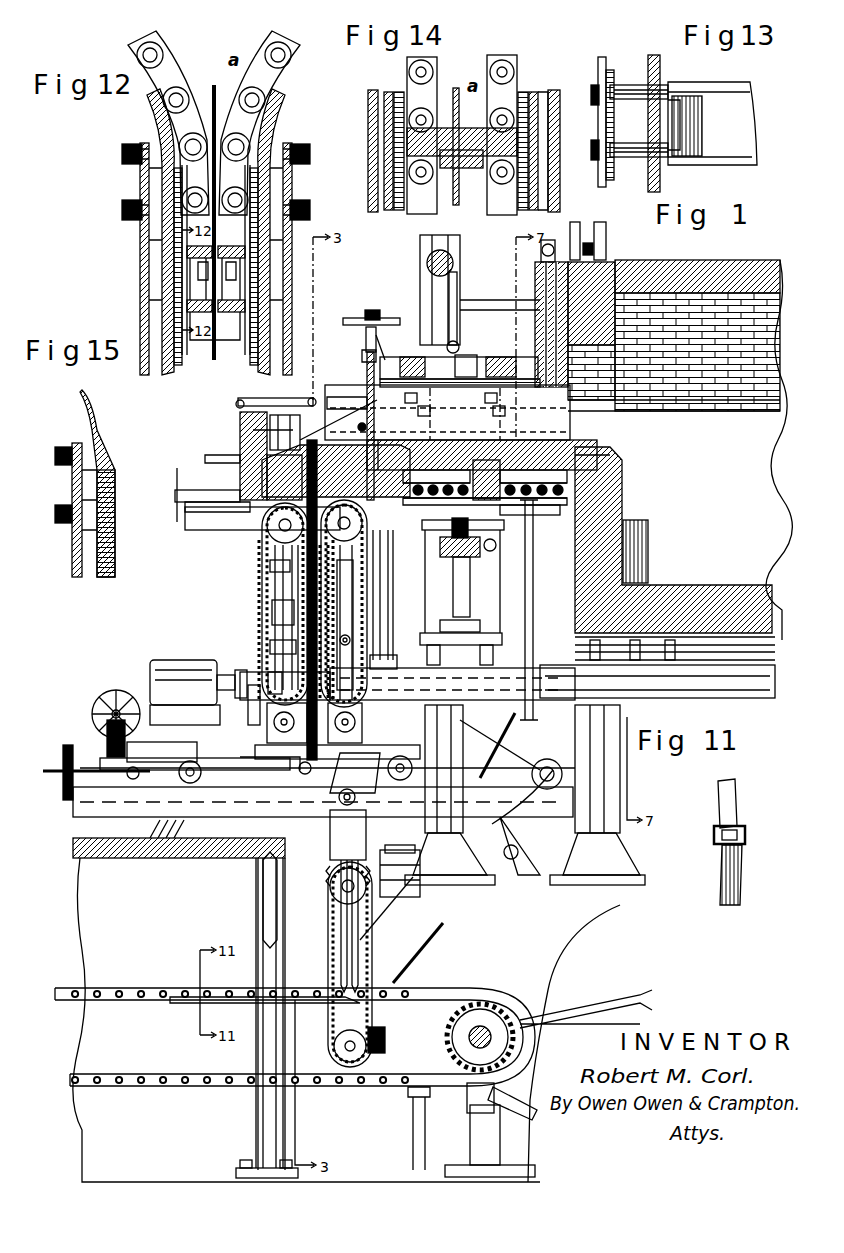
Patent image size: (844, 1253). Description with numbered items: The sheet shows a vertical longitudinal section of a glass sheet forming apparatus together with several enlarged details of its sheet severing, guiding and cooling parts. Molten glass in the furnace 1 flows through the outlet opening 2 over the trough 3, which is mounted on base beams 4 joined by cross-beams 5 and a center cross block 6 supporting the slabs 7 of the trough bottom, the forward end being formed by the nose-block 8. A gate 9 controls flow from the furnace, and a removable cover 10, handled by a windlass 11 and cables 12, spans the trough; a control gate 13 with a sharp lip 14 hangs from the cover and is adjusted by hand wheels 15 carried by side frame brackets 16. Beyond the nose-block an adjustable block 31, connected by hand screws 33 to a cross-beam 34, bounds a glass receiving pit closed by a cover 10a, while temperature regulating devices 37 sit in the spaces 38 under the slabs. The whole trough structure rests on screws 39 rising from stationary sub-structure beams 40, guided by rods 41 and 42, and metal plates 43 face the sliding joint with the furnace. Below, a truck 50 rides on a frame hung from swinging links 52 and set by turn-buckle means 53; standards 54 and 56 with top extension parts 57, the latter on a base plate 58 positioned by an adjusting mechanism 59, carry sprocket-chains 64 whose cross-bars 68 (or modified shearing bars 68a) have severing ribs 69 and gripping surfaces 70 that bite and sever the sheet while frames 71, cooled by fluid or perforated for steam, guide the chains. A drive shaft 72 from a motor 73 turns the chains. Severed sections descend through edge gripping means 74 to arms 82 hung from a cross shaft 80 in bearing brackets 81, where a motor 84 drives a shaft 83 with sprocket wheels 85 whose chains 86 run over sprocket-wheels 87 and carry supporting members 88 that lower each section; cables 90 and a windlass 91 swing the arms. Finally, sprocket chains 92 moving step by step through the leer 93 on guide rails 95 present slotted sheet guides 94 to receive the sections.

In FIG. 1, the furnace 1 is at (703, 450).
In FIG. 1, the outlet opening 2 is at (600, 442).
In FIG. 1, the discharge trough 3 is at (440, 426).
In FIG. 1, the base beams 4 is at (210, 521).
In FIG. 1, the cross-beams 5 is at (575, 474).
In FIG. 1, the center cross block 6 is at (506, 521).
In FIG. 1, the slabs 7 is at (519, 466).
In FIG. 1, the nose-block 8 is at (380, 452).
In FIG. 1, the gate 9 is at (534, 313).
In FIG. 1, the removable cover 10 is at (477, 362).
In FIG. 1, the cover 10a is at (277, 398).
In FIG. 1, the windlass 11 is at (435, 262).
In FIG. 1, the cables 12 is at (454, 286).
In FIG. 1, the control gate 13 is at (368, 396).
In FIG. 1, the lip 14 is at (351, 426).
In FIG. 1, the hand wheels 15 is at (366, 322).
In FIG. 1, the side frame brackets 16 is at (361, 357).
In FIG. 1, the block 31 is at (238, 440).
In FIG. 1, the hand screws 33 is at (222, 490).
In FIG. 1, the cross-beam 34 is at (182, 512).
In FIG. 1, the temperature regulating devices 37 is at (575, 498).
In FIG. 1, the spaces 38 is at (570, 440).
In FIG. 1, the screws 39 is at (469, 611).
In FIG. 1, the sub-structure beams 40 is at (758, 690).
In FIG. 1, the guide rods 41 is at (535, 579).
In FIG. 1, the guide rods 42 is at (380, 590).
In FIG. 1, the metal plates 43 is at (606, 452).
In FIG. 1, the truck 50 is at (240, 771).
In FIG. 1, the swinging links 52 is at (165, 830).
In FIG. 1, the turn-buckle means 53 is at (508, 728).
In FIG. 1, the standard 54 is at (352, 701).
In FIG. 1, the standards 56 is at (275, 668).
In FIG. 1, the top extension parts 57 is at (130, 820).
In FIG. 1, the base plate 58 is at (190, 781).
In FIG. 1, the adjusting mechanism 59 is at (92, 716).
In FIG. 12, the sprocket-chain 64 is at (167, 74).
In FIG. 14, the sprocket-chain 64 is at (434, 70).
In FIG. 13, the sprocket-chain 64 is at (651, 70).
In FIG. 1, the sprocket-chain 64 is at (262, 568).
In FIG. 12, the cross-bars 68 is at (188, 255).
In FIG. 13, the cross-bars 68 is at (737, 122).
In FIG. 1, the cross-bars 68 is at (263, 538).
In FIG. 14, the gripping bars 68a is at (522, 96).
In FIG. 12, the severing ribs 69 is at (188, 280).
In FIG. 12, the gripping surface 70 is at (188, 296).
In FIG. 12, the frames 71 is at (156, 133).
In FIG. 15, the frames 71 is at (104, 446).
In FIG. 1, the drive shaft 72 is at (254, 700).
In FIG. 1, the motor 73 is at (186, 672).
In FIG. 1, the edge gripping and guiding means 74 is at (310, 802).
In FIG. 1, the cross shaft 80 is at (357, 807).
In FIG. 1, the bearing brackets 81 is at (358, 797).
In FIG. 1, the frame arm 82 is at (345, 850).
In FIG. 1, the shaft 83 is at (374, 906).
In FIG. 1, the motor 84 is at (416, 880).
In FIG. 1, the sprocket wheel 85 is at (330, 897).
In FIG. 1, the chain 86 is at (368, 956).
In FIG. 1, the sprocket-wheel 87 is at (334, 1046).
In FIG. 1, the sheet section supporting members 88 is at (385, 1042).
In FIG. 1, the cable 90 is at (421, 955).
In FIG. 1, the windlass 91 is at (549, 760).
In FIG. 1, the sprocket chains 92 is at (488, 990).
In FIG. 1, the leer 93 is at (105, 918).
In FIG. 11, the sheet guides 94 is at (735, 802).
In FIG. 1, the sheet guides 94 is at (262, 902).
In FIG. 11, the guide rail 95 is at (722, 846).
In FIG. 1, the guide rail 95 is at (188, 1003).